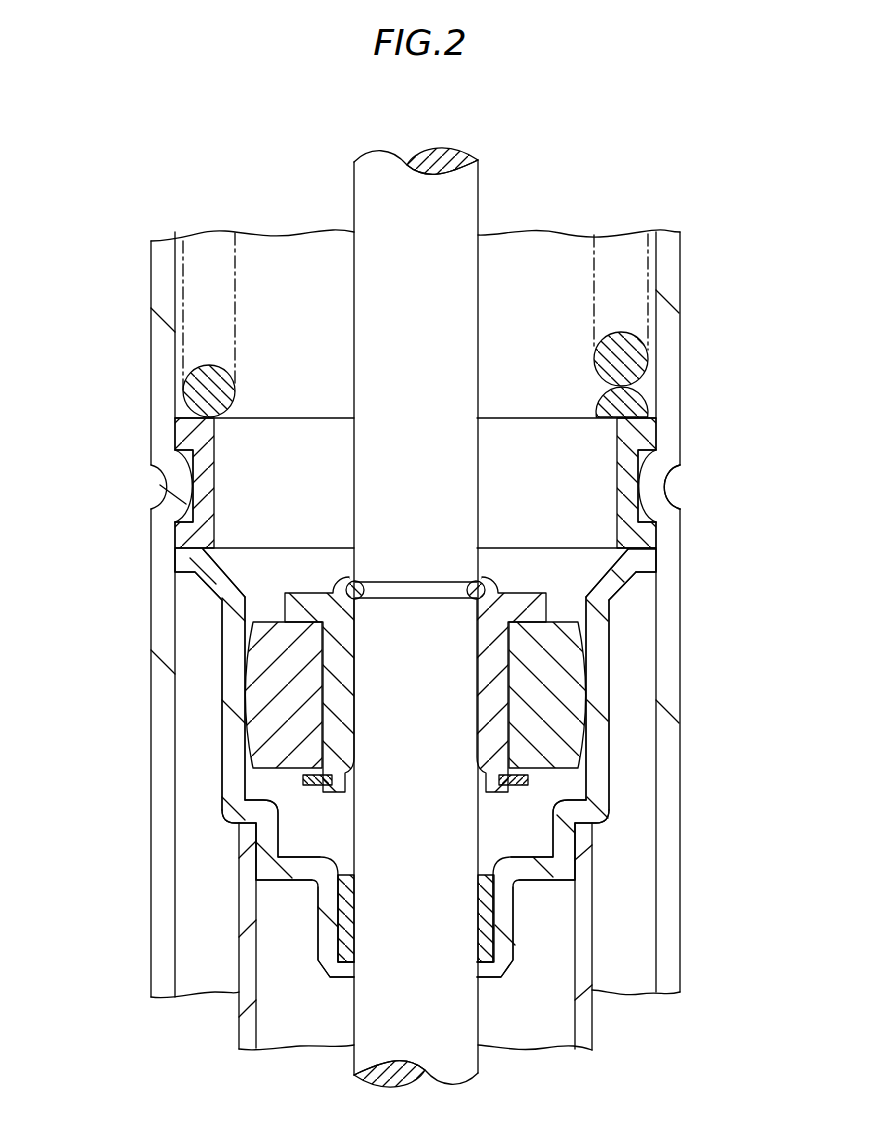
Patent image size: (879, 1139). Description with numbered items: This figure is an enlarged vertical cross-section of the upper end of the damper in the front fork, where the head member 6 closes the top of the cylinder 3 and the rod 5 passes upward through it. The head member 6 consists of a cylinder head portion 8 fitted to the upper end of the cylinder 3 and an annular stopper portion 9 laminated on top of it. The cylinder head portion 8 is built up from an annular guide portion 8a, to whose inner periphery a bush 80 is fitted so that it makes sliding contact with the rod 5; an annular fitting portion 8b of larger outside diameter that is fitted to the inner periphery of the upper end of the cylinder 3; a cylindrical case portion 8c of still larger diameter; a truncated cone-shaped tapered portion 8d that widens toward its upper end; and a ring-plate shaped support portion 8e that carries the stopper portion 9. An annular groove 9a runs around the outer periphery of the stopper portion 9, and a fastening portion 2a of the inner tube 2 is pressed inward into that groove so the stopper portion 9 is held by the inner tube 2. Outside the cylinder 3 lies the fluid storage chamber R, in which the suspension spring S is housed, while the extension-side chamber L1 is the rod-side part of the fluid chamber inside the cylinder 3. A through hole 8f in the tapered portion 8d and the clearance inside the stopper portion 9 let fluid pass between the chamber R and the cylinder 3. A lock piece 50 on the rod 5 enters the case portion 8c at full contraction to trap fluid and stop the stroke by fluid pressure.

The inner tube 2 is at (150, 955).
The fastening portion 2a is at (196, 484).
The cylinder 3 is at (593, 1020).
The rod 5 is at (353, 182).
The head member 6 is at (212, 672).
The cylinder head portion 8 is at (212, 812).
The guide portion 8a is at (515, 927).
The fitting portion 8b is at (580, 838).
The case portion 8c is at (612, 697).
The tapered portion 8d is at (637, 593).
The support portion 8e is at (650, 572).
The through hole 8f is at (212, 580).
The stopper portion 9 is at (175, 437).
The annular groove 9a is at (648, 506).
The lock piece 50 is at (272, 738).
The bush 80 is at (340, 940).
The suspension spring S is at (193, 388).
The fluid storage chamber R is at (536, 342).
The extension-side chamber L1 is at (550, 1040).